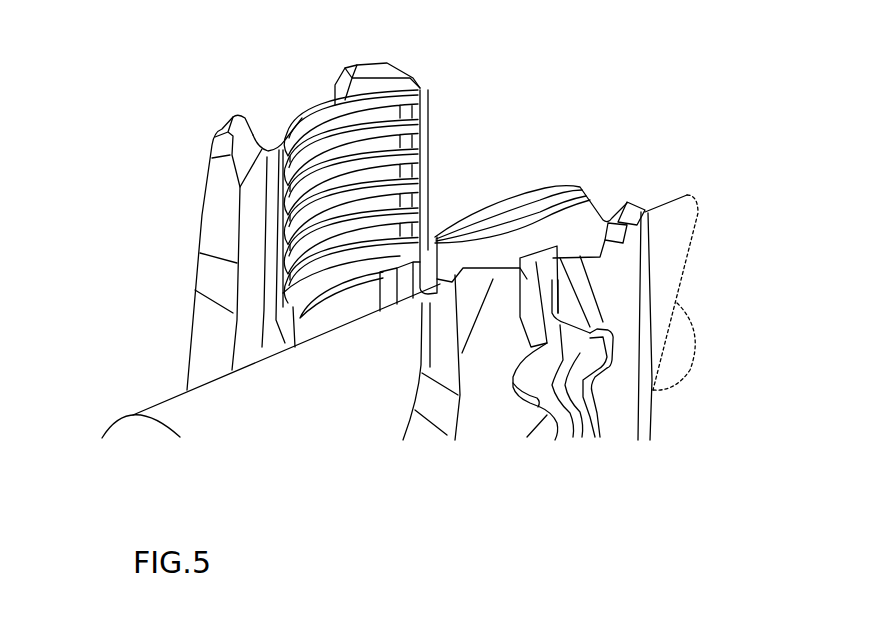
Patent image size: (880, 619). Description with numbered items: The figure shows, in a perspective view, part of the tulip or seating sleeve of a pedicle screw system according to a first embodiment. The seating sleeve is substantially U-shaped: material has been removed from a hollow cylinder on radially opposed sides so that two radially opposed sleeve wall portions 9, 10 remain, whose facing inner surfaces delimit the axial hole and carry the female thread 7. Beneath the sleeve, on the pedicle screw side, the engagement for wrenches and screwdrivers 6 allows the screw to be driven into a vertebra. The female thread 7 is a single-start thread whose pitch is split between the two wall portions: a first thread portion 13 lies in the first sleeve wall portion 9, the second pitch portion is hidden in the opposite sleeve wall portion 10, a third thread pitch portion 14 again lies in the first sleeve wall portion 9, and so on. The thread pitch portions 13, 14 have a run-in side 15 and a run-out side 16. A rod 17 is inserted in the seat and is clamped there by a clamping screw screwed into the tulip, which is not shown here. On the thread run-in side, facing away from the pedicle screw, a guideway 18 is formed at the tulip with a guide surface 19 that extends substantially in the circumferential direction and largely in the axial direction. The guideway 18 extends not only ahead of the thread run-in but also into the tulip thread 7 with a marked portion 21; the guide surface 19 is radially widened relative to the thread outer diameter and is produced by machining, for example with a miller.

The engagement for wrenches and screwdrivers 6 is at (263, 137).
The female thread 7 is at (283, 245).
The first sleeve wall portion 9 is at (220, 227).
The second sleeve wall portion 10 is at (637, 280).
The first thread portion 13 is at (403, 162).
The third thread pitch portion 14 is at (403, 196).
The run-in side 15 is at (277, 190).
The run-out side 16 is at (421, 228).
The rod 17 is at (323, 390).
The guideway 18 is at (432, 99).
The guide surface 19 is at (413, 85).
The portion of the guideway extending into the tulip thread 21 is at (400, 128).